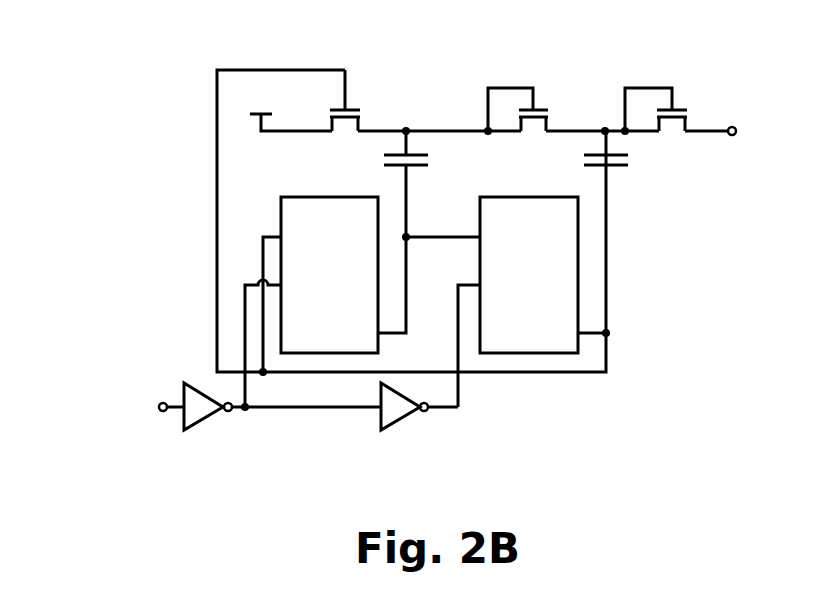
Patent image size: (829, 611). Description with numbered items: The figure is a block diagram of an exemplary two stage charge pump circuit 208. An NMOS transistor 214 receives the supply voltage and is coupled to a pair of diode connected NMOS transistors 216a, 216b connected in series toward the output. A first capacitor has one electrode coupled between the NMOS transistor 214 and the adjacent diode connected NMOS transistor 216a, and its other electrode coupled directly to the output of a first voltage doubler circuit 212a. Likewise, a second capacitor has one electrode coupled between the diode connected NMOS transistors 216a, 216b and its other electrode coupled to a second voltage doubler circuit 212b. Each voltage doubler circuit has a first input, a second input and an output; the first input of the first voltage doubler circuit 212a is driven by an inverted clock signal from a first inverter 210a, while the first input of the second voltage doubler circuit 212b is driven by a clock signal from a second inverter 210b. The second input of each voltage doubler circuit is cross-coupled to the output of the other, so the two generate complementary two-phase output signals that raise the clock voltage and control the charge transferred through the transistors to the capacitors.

The two stage charge pump circuit 208 is at (150, 66).
The NMOS transistor 214 is at (359, 98).
The diode connected NMOS transistor 216a is at (563, 94).
The diode connected NMOS transistor 216b is at (693, 94).
The first voltage doubler circuit 212a is at (291, 195).
The second voltage doubler circuit 212b is at (491, 195).
The first inverter 210a is at (194, 423).
The inverter 210b is at (393, 423).